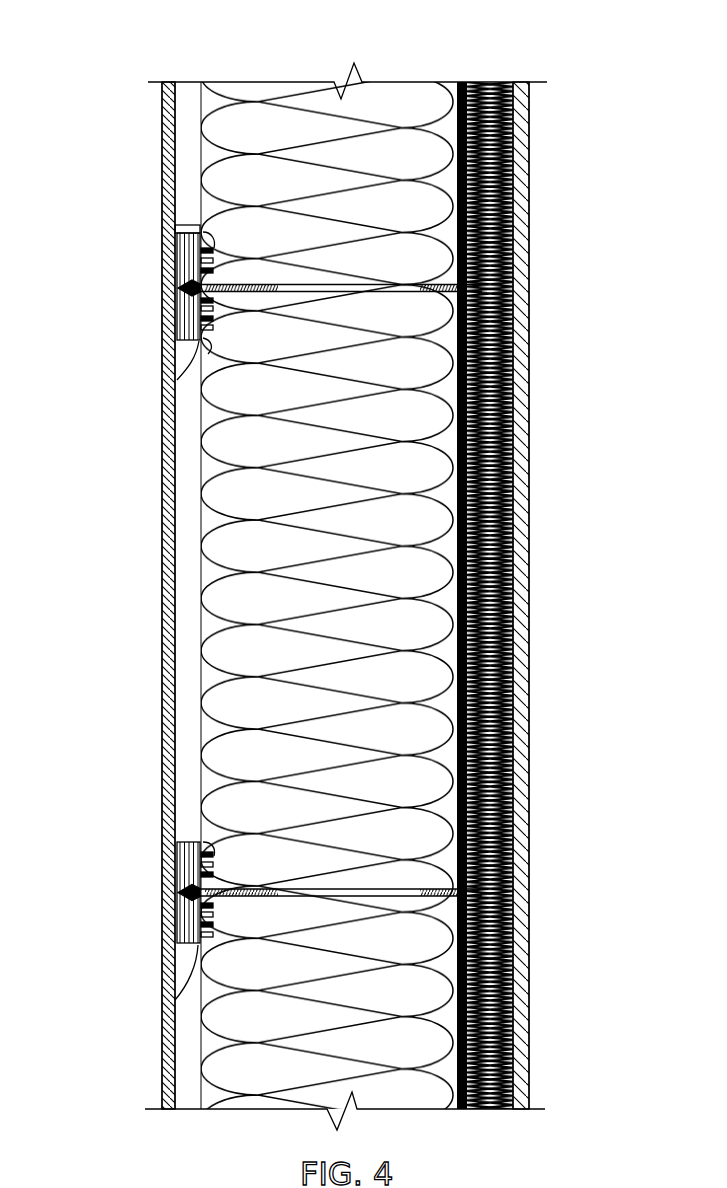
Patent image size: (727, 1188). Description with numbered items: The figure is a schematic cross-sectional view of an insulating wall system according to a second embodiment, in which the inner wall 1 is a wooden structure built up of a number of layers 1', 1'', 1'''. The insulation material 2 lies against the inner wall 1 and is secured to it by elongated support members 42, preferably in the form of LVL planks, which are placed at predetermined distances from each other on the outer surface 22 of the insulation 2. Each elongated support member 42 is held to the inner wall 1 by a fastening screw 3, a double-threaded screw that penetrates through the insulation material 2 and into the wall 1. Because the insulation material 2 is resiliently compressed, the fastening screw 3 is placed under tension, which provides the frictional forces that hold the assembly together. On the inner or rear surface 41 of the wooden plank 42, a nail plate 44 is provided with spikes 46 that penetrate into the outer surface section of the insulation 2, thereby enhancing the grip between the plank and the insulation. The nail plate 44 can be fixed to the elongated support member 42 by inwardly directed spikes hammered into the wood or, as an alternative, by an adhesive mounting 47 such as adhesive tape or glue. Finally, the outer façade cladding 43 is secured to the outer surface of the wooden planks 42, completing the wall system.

The inner wall 1 is at (354, 570).
The layer of the inner wall 1' is at (513, 595).
The layer of the inner wall 1'' is at (545, 595).
The layer of the inner wall 1''' is at (552, 595).
The insulation material 2 is at (392, 103).
The fastening screw 3 is at (163, 891).
The outer surface of the insulation 22 is at (200, 570).
The inner surface of the elongated support member 41 is at (224, 343).
The elongated support member 42 is at (172, 318).
The outer façade cladding 43 is at (175, 962).
The nail plate 44 is at (174, 227).
The spike 46 is at (208, 352).
The adhesive mounting 47 is at (212, 334).